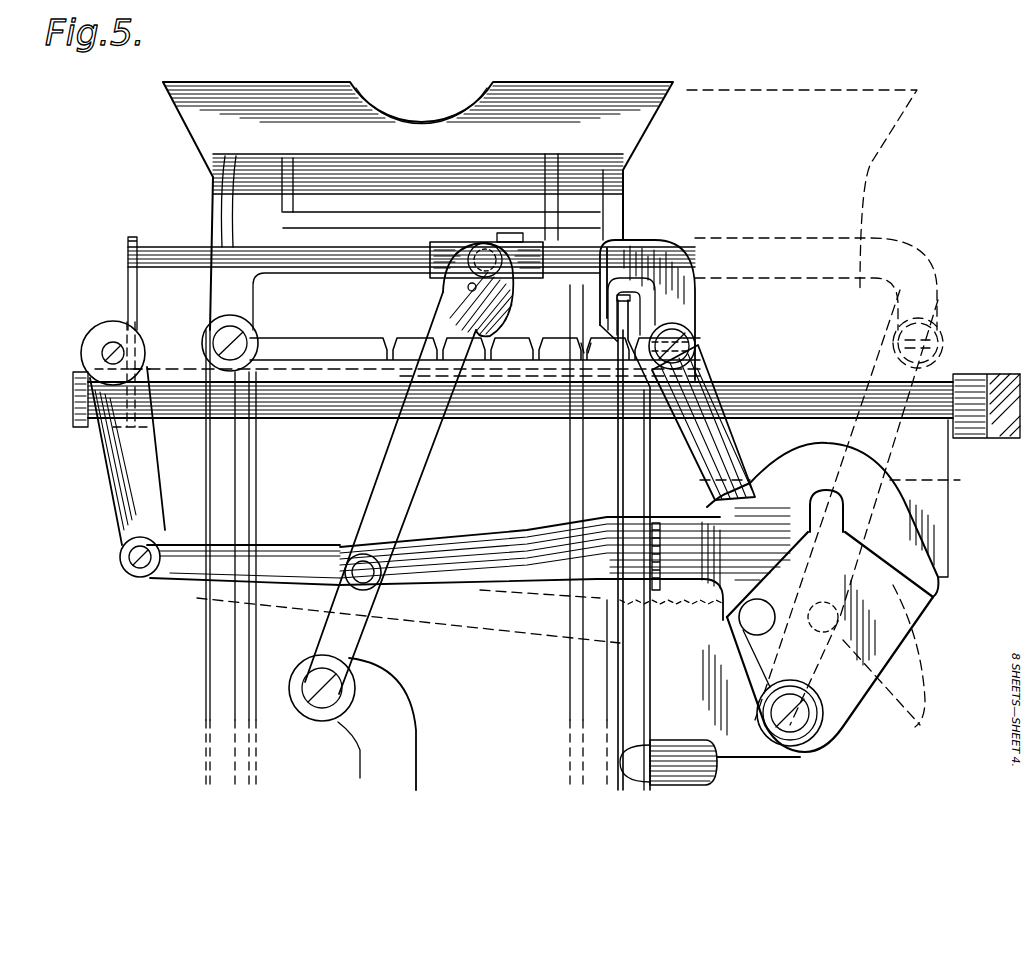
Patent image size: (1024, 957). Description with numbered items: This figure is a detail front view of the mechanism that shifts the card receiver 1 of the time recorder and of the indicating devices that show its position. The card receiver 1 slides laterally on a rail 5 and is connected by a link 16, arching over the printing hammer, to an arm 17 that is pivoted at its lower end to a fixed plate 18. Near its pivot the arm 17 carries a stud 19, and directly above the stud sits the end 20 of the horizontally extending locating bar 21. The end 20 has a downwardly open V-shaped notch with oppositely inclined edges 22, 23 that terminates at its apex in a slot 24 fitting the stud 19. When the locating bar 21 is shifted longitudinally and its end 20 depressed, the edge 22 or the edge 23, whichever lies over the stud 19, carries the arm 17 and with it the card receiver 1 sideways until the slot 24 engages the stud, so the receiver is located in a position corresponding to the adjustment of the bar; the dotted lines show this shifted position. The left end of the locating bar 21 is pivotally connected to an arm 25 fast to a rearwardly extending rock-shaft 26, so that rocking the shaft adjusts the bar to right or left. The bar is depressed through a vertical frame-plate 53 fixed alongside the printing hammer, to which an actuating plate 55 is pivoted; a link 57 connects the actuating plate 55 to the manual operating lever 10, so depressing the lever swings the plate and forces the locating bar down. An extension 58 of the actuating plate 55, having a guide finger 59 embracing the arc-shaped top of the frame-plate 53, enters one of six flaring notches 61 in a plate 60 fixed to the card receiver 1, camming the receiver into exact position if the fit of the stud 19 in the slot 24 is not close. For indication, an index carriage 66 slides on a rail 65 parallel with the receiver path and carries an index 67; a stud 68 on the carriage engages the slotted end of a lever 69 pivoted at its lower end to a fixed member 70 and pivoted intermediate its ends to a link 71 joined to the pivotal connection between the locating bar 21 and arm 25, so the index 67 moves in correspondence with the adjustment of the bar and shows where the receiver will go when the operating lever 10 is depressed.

The card receiver 1 is at (353, 103).
The rail 5 is at (812, 388).
The manual operating lever 10 is at (718, 775).
The link 16 is at (668, 258).
The arm or lever 17 is at (703, 422).
The fixed plate 18 is at (925, 486).
The stud 19 is at (760, 624).
The end of locating member 20 is at (792, 468).
The locating bar 21 is at (565, 564).
The inclined edge 22 is at (790, 556).
The inclined edge 23 is at (900, 572).
The slot 24 is at (828, 506).
The arm 25 is at (127, 472).
The rock-shaft 26 is at (100, 350).
The frame-plate 53 is at (631, 457).
The actuating plate 55 is at (633, 500).
The link 57 is at (651, 713).
The extension 58 is at (637, 321).
The guide finger 59 is at (622, 292).
The plate 60 is at (365, 338).
The flaring notches 61 is at (575, 338).
The rail 65 is at (165, 247).
The index carriage 66 is at (525, 268).
The index 67 is at (510, 233).
The stud 68 is at (470, 258).
The arm or lever 69 is at (417, 457).
The fixed member 70 is at (387, 690).
The link 71 is at (262, 555).